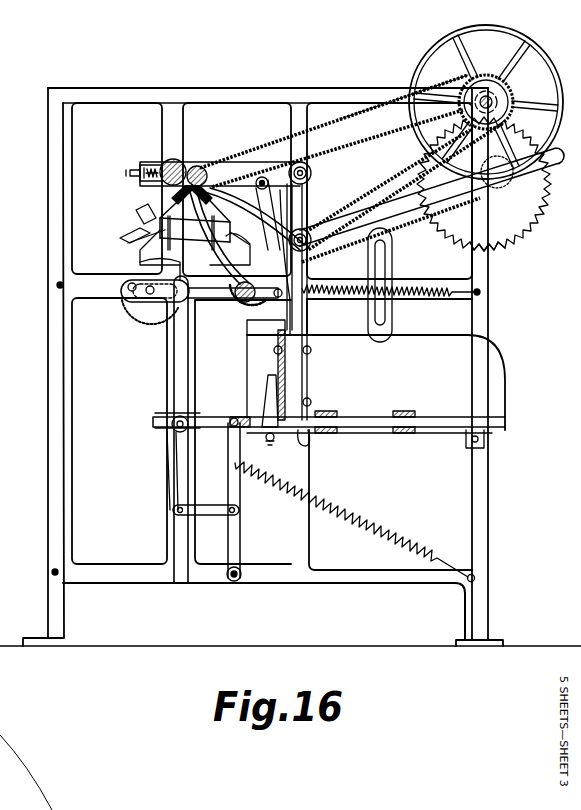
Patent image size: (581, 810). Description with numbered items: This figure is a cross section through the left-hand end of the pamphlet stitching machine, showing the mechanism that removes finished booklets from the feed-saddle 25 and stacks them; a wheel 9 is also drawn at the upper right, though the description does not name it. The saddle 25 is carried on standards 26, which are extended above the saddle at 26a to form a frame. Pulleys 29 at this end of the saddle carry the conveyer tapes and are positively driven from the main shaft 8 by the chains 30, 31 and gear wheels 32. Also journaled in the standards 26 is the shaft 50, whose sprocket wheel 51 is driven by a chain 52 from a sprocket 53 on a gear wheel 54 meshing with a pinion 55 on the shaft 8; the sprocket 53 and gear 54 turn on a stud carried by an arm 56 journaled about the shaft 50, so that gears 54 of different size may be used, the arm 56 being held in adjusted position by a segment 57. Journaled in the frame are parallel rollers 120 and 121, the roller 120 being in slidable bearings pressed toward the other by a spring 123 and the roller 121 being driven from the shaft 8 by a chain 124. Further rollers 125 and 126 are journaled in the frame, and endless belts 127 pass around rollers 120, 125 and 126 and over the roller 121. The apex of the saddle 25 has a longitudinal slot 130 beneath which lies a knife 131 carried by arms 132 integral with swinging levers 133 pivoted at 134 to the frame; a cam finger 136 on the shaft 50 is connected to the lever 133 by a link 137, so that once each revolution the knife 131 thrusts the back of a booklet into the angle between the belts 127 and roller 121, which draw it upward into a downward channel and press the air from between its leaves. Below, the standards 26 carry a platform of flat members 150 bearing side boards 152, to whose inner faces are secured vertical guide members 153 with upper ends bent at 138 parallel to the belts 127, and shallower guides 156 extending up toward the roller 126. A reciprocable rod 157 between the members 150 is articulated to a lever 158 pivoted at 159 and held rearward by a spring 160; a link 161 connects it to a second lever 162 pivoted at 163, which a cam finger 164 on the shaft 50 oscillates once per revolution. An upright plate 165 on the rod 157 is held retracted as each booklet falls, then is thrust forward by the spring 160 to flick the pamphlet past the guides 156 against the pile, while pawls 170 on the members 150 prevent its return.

The main shaft 8 is at (496, 108).
The fly wheel 9 is at (486, 102).
The feed-saddle 25 is at (140, 232).
The standards 26 is at (48, 519).
The frame 26a is at (62, 101).
The pulleys 29 is at (132, 243).
The chain 30 is at (404, 140).
The chain 31 is at (215, 239).
The gear wheels 32 is at (162, 234).
The shaft 50 is at (142, 300).
The sprocket wheel 51 is at (155, 306).
The chain 52 is at (407, 234).
The sprocket 53 is at (496, 192).
The gear wheel 54 is at (508, 236).
The pinion 55 is at (510, 91).
The arm 56 is at (432, 197).
The segment 57 is at (384, 315).
The roller 120 is at (170, 160).
The roller 121 is at (199, 167).
The spring 123 is at (141, 168).
The chain 124 is at (263, 151).
The roller 125 is at (316, 156).
The roller 126 is at (314, 260).
The endless belts 127 is at (310, 187).
The longitudinal slot 130 is at (176, 185).
The knife 131 is at (167, 198).
The arms 132 is at (232, 236).
The swinging levers 133 is at (275, 217).
The pivot 134 is at (266, 174).
The cam finger 136 is at (142, 275).
The link 137 is at (208, 298).
The bent upper end of guide member 138 is at (242, 214).
The flat members 150 is at (436, 430).
The side board 152 is at (376, 382).
The vertical guide members 153 is at (286, 328).
The shallow guides 156 is at (316, 383).
The reciprocable rod 157 is at (378, 430).
The lever 158 is at (256, 459).
The pivot 159 is at (236, 580).
The spring 160 is at (355, 522).
The link 161 is at (208, 511).
The second lever 162 is at (176, 452).
The pivot 163 is at (172, 428).
The cam finger 164 is at (182, 322).
The upright plate 165 is at (265, 387).
The pawls 170 is at (308, 444).